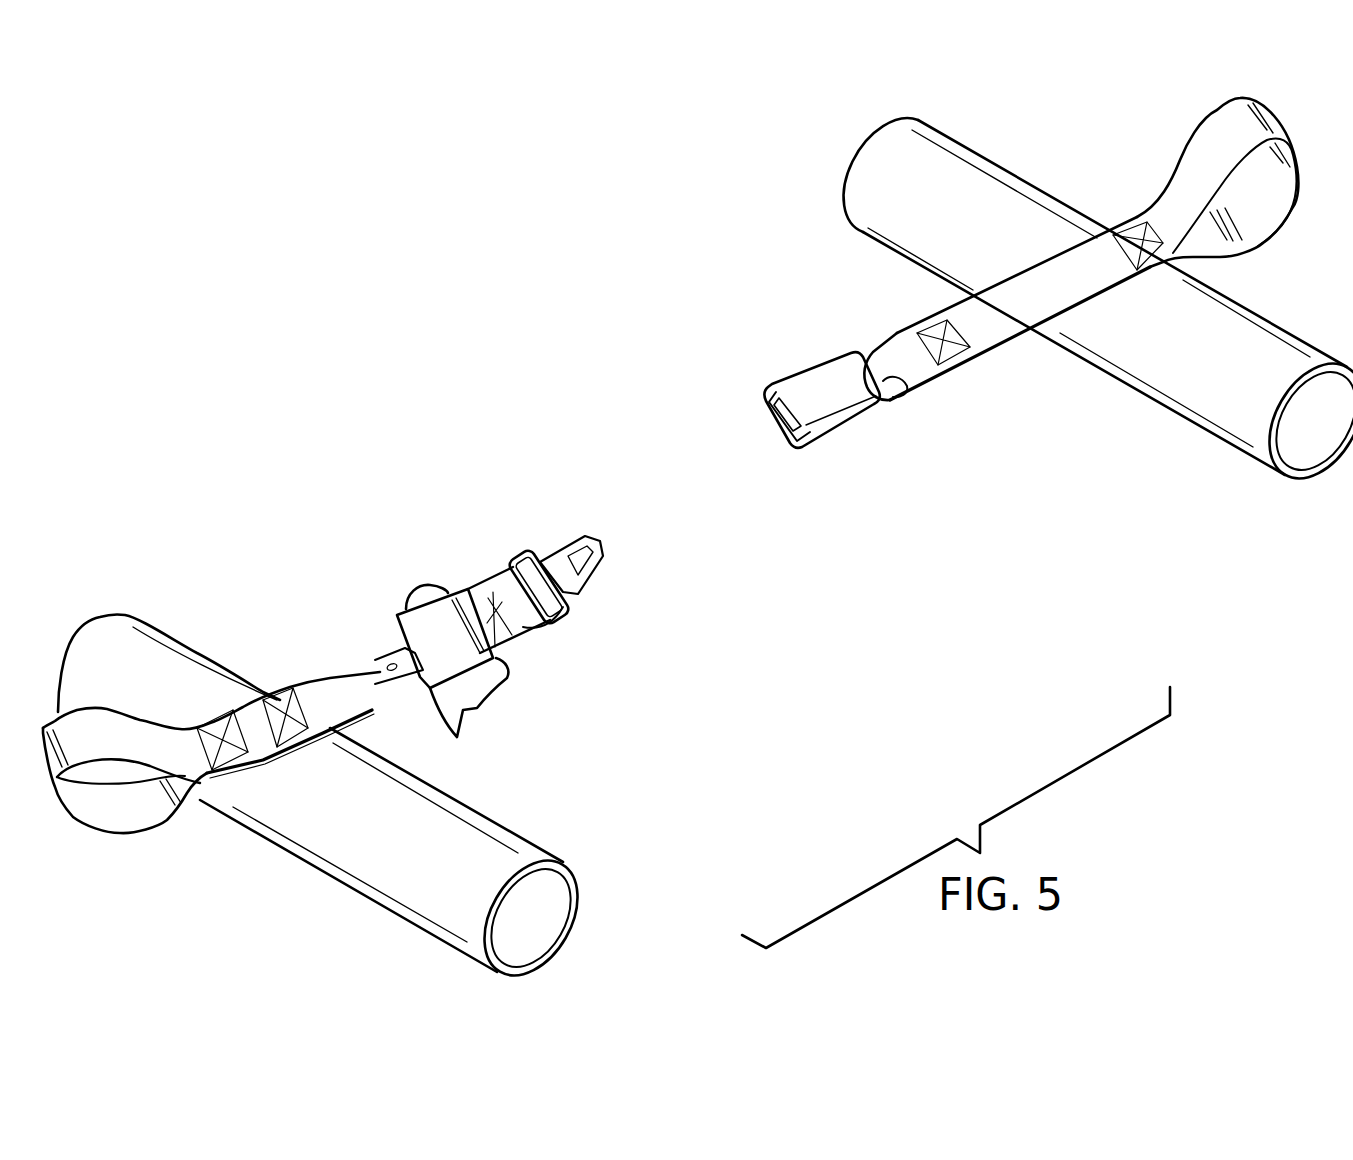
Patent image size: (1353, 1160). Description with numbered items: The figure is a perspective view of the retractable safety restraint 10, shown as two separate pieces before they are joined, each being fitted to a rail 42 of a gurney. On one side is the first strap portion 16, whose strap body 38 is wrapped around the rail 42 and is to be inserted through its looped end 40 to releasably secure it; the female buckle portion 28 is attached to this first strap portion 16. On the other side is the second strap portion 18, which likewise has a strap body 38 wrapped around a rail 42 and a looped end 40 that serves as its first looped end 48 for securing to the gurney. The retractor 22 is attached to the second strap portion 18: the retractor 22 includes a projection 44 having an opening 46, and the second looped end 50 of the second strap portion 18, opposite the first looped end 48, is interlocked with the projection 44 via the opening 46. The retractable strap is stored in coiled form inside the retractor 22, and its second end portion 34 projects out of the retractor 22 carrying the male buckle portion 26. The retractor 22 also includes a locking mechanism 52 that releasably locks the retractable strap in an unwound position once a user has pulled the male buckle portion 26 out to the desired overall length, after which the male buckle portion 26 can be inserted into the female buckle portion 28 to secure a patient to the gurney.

The retractable safety restraint 10 is at (478, 200).
The first strap portion 16 is at (1117, 135).
The second strap portion 18 is at (307, 640).
The retractor 22 is at (490, 697).
The male buckle portion 26 is at (574, 612).
The female buckle portion 28 is at (830, 403).
The second end portion 34 is at (517, 598).
The strap body 38 is at (1043, 297).
The looped end 40 is at (1272, 200).
The rail 42 is at (1213, 398).
The projection 44 is at (407, 660).
The opening 46 is at (380, 673).
The first looped end 48 is at (112, 815).
The second looped end 50 is at (350, 690).
The locking mechanism 52 is at (427, 588).